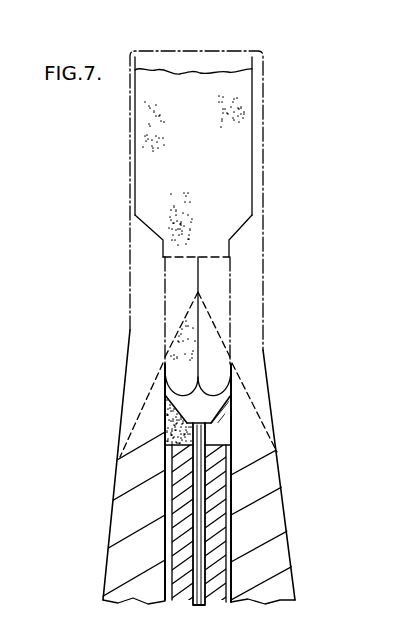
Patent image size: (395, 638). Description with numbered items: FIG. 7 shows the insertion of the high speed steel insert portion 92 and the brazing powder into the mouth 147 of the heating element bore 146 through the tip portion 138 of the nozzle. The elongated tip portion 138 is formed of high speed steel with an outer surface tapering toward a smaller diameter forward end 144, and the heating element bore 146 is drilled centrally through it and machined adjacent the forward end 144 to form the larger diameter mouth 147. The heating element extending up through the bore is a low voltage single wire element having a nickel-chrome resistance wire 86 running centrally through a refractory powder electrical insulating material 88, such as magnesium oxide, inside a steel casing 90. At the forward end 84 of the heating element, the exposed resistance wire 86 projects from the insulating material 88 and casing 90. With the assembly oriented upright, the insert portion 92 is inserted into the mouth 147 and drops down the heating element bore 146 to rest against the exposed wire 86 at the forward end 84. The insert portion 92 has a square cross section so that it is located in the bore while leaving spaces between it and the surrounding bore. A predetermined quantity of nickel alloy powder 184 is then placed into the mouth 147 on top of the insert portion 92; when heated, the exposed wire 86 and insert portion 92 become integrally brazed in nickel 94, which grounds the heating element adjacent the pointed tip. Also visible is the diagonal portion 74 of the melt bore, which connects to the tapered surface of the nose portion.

The forward end 144 is at (148, 52).
The mouth 147 is at (229, 62).
The nickel alloy powder 184 is at (240, 162).
The heating element bore 146 is at (227, 268).
The high speed steel insert portion 92 is at (228, 373).
The nickel 94 is at (223, 418).
The resistance wire 86 is at (203, 435).
The forward end 84 is at (165, 433).
The refractory powder electrical insulating material 88 is at (218, 522).
The steel casing 90 is at (230, 552).
The diagonal portion 74 is at (218, 582).
The tip portion 138 is at (118, 570).